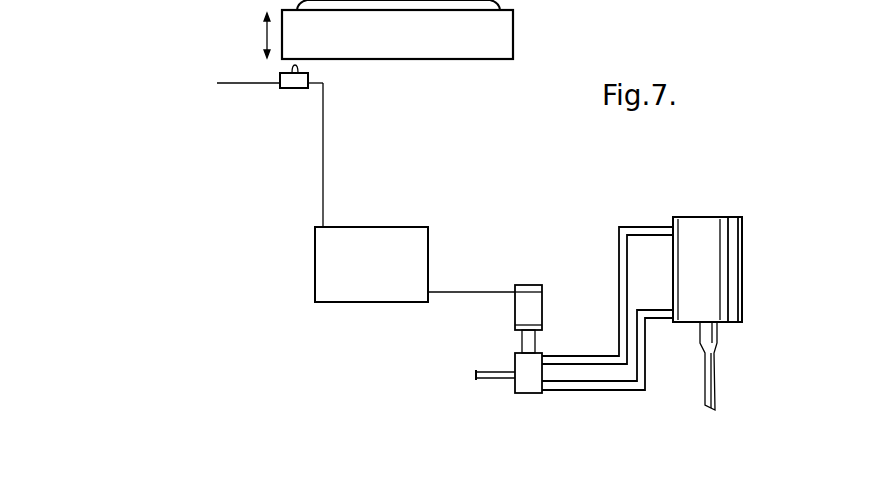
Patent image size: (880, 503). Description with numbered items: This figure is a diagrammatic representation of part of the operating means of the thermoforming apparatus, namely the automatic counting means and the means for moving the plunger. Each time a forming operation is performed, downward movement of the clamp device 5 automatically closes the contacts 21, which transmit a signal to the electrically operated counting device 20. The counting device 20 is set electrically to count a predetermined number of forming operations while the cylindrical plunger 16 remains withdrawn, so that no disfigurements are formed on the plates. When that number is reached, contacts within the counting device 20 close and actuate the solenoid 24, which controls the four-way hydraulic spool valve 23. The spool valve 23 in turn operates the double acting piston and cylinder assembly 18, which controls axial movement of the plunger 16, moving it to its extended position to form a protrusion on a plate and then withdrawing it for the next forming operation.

The clamp device 5 is at (415, 50).
The cylindrical plunger 16 is at (713, 390).
The double acting piston and cylinder assembly 18 is at (727, 272).
The electrically operated counting device 20 is at (411, 260).
The contacts 21 is at (289, 90).
The four-way hydraulic spool valve 23 is at (515, 382).
The solenoid 24 is at (543, 303).